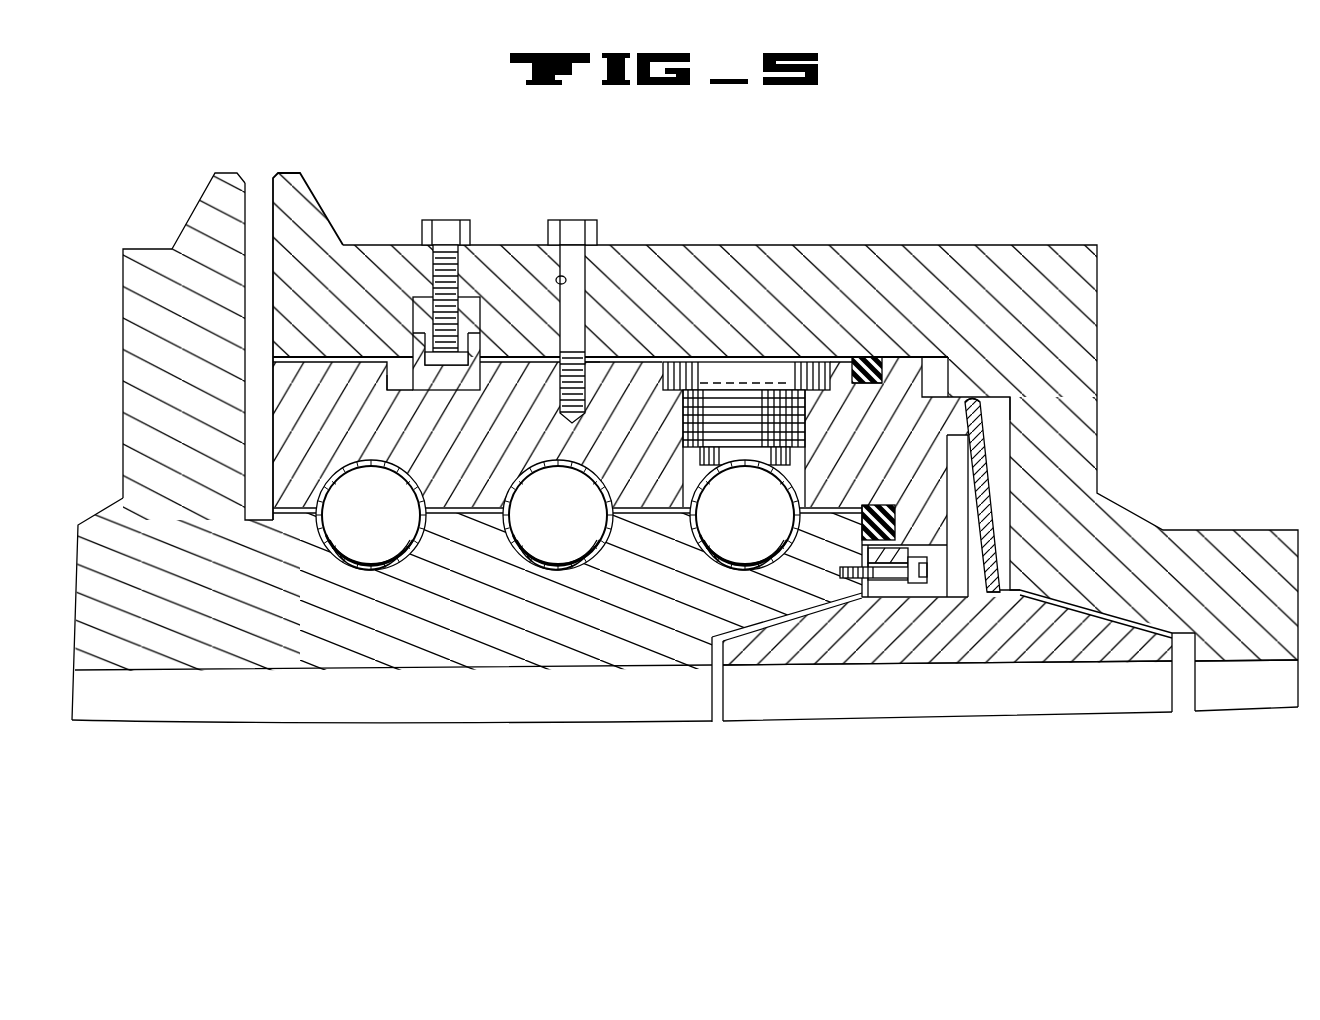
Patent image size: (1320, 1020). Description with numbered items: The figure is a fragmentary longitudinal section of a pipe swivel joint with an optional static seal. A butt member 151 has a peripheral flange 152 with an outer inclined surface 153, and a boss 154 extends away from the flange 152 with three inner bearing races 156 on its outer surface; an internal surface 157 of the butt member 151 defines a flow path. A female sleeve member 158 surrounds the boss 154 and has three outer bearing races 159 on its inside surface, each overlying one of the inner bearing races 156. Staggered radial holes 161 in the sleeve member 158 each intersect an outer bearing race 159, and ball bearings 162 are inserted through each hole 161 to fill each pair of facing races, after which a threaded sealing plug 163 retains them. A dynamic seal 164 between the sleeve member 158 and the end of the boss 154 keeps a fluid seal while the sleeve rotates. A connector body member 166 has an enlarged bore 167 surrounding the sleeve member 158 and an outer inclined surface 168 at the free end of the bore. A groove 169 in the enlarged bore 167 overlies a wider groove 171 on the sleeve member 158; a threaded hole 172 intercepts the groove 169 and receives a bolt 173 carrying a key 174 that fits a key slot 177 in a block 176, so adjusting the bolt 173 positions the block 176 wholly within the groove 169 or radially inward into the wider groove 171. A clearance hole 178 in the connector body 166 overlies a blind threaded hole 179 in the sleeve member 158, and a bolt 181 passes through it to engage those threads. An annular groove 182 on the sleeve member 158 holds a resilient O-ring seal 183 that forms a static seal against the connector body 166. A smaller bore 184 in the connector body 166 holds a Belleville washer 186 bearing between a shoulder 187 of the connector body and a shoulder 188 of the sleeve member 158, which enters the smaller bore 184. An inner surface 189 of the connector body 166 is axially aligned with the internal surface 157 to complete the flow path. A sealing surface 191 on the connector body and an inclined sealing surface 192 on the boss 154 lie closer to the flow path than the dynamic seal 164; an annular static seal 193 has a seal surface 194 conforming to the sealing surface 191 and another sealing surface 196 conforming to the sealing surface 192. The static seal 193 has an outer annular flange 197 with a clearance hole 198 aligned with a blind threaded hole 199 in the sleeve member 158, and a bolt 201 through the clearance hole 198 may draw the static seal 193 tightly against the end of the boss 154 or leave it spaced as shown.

The butt member 151 is at (110, 505).
The peripheral flange 152 is at (123, 285).
The outer inclined surface 153 is at (212, 187).
The boss 154 is at (628, 663).
The inner bearing races 156 is at (418, 553).
The internal surface 157 is at (495, 672).
The female sleeve member 158 is at (675, 358).
The outer bearing races 159 is at (566, 515).
The radial holes 161 is at (806, 468).
The ball bearings 162 is at (420, 538).
The threaded sealing plug 163 is at (755, 362).
The dynamic seal 164 is at (878, 505).
The connector body member 166 is at (750, 245).
The enlarged bore 167 is at (590, 366).
The outer inclined surface 168 is at (305, 187).
The groove 169 is at (482, 312).
The wider groove 171 is at (389, 388).
The threaded hole 172 is at (440, 276).
The bolt 173 is at (448, 274).
The key 174 is at (455, 345).
The block 176 is at (455, 385).
The key slot 177 is at (440, 350).
The clearance hole 178 is at (555, 280).
The blind threaded hole 179 is at (580, 398).
The bolt 181 is at (571, 303).
The annular groove 182 is at (864, 386).
The O-ring seal 183 is at (866, 357).
The smaller bore 184 is at (1010, 398).
The Belleville washer 186 is at (985, 490).
The shoulder 187 is at (993, 597).
The shoulder 188 is at (982, 405).
The inner surface 189 is at (1225, 663).
The sealing surface 191 is at (1133, 625).
The inclined sealing surface 192 is at (775, 625).
The annular static seal 193 is at (947, 675).
The seal surface 194 is at (1083, 605).
The sealing surface 196 is at (812, 610).
The outer annular flange 197 is at (915, 545).
The clearance hole 198 is at (888, 578).
The blind threaded hole 199 is at (838, 572).
The bolt 201 is at (935, 590).